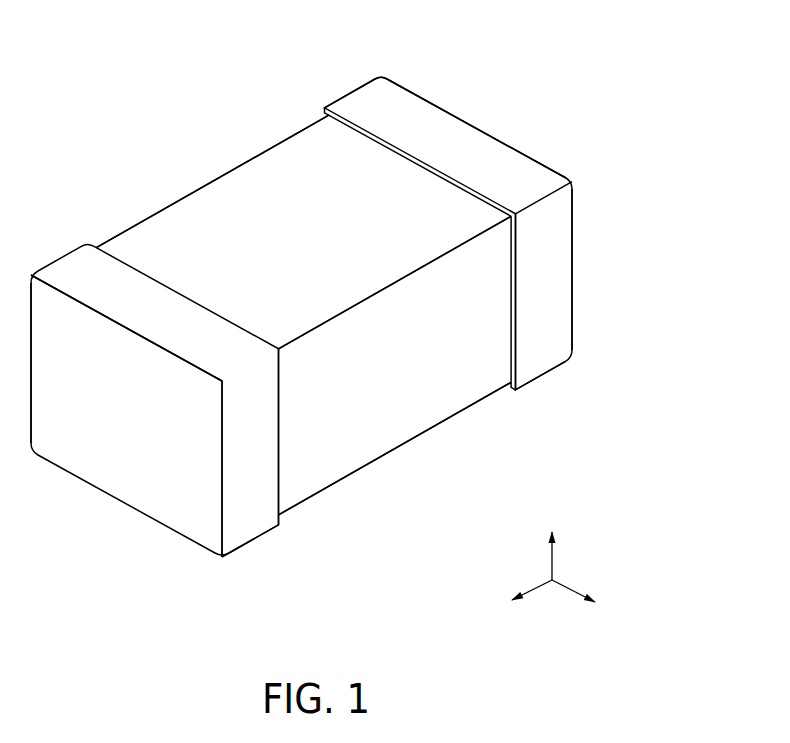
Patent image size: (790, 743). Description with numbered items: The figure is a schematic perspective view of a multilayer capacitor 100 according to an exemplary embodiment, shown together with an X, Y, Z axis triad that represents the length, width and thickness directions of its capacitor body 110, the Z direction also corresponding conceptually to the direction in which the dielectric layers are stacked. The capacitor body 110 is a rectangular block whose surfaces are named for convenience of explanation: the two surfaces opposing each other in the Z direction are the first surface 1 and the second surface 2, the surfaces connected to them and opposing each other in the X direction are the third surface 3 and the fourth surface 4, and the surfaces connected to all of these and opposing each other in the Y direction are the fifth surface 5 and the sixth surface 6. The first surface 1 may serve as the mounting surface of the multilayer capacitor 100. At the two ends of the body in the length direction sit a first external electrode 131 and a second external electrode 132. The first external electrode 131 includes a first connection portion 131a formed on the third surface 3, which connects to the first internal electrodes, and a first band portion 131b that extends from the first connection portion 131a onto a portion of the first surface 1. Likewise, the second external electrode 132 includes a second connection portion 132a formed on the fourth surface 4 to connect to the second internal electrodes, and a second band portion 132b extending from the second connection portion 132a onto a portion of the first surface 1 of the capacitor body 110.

The multilayer capacitor 100 is at (137, 87).
The capacitor body 110 is at (237, 203).
The first surface 1 is at (337, 427).
The second surface 2 is at (318, 215).
The third surface 3 is at (134, 432).
The fourth surface 4 is at (452, 210).
The fifth surface 5 is at (403, 375).
The sixth surface 6 is at (209, 256).
The first external electrode 131 is at (188, 594).
The first connection portion 131a is at (133, 490).
The first band portion 131b is at (168, 533).
The second external electrode 132 is at (674, 273).
The second connection portion 132a is at (573, 253).
The second band portion 132b is at (552, 383).